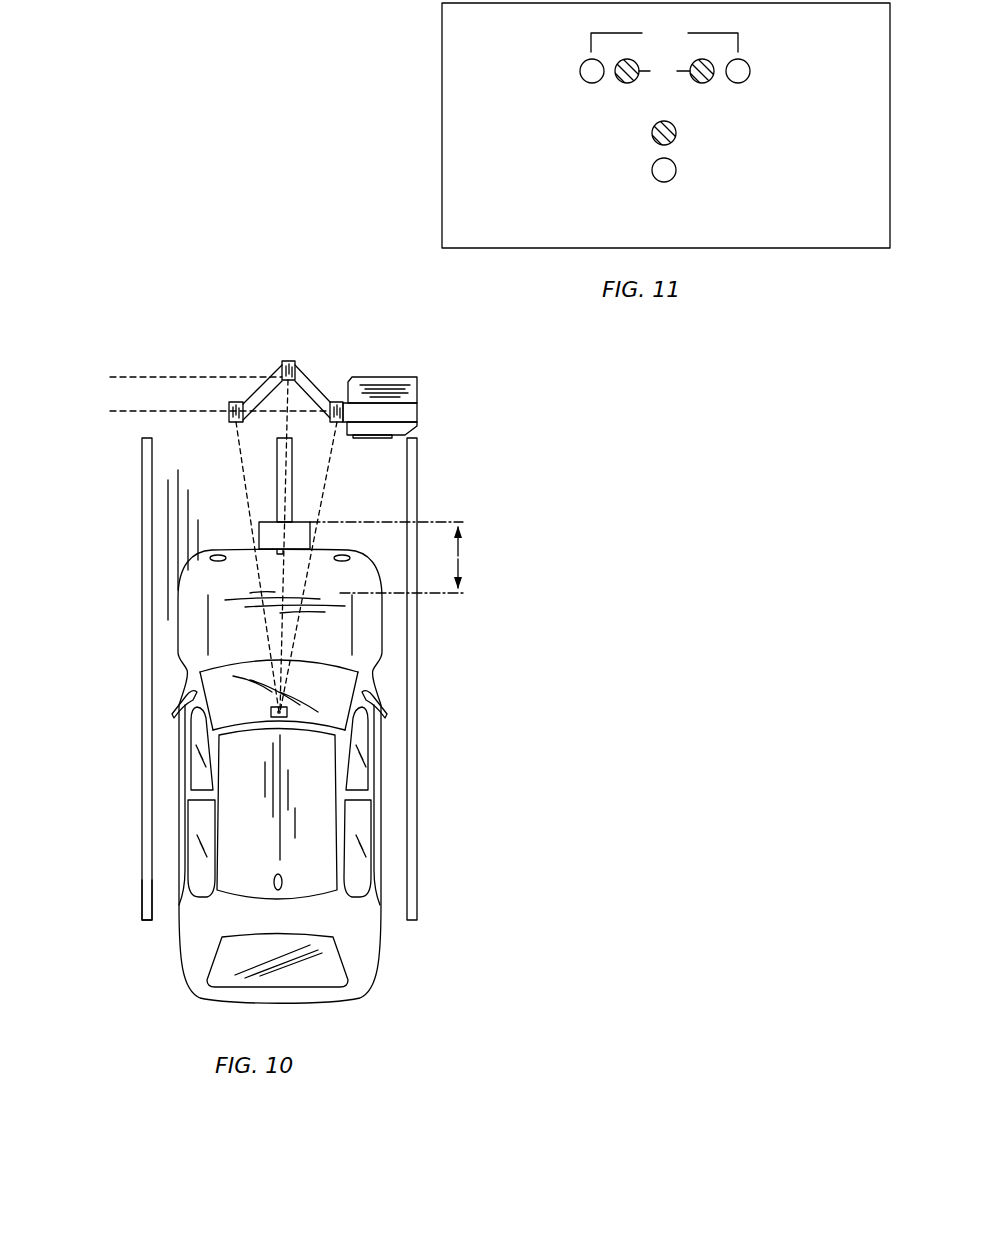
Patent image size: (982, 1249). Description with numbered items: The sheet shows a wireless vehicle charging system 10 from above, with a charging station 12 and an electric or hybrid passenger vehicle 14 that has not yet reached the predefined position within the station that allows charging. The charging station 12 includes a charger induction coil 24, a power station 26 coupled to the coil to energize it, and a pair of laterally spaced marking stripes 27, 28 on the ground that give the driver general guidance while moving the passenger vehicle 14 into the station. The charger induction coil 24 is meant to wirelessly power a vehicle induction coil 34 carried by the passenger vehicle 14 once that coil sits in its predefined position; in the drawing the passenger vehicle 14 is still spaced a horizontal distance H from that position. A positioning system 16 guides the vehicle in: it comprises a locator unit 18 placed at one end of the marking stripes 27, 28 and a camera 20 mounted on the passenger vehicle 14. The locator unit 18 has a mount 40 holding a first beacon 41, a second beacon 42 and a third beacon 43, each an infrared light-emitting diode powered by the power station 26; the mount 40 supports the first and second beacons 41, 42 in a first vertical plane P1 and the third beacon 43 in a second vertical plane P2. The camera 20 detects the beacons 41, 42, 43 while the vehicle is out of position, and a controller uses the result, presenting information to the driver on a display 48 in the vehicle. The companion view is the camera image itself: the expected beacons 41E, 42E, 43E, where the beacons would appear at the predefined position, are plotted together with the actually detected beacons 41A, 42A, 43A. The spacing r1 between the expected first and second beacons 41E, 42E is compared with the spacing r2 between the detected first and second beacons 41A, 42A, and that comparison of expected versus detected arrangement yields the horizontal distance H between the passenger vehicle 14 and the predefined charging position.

In FIG. 10, the wireless vehicle charging system 10 is at (155, 296).
In FIG. 10, the charging station 12 is at (139, 443).
In FIG. 10, the passenger vehicle 14 is at (381, 817).
In FIG. 10, the positioning system 16 is at (226, 427).
In FIG. 10, the locator unit 18 is at (316, 332).
In FIG. 10, the camera 20 is at (294, 709).
In FIG. 10, the charger induction coil 24 is at (306, 519).
In FIG. 10, the power station 26 is at (421, 401).
In FIG. 10, the marking stripe 27 is at (420, 898).
In FIG. 10, the marking stripe 28 is at (139, 891).
In FIG. 10, the vehicle induction coil 34 is at (381, 769).
In FIG. 10, the mount 40 is at (265, 379).
In FIG. 10, the first beacon 41 is at (236, 400).
In FIG. 10, the second beacon 42 is at (338, 400).
In FIG. 10, the third beacon 43 is at (288, 357).
In FIG. 10, the display 48 is at (365, 737).
In FIG. 10, the horizontal distance H is at (399, 557).
In FIG. 10, the first vertical plane P1 is at (132, 411).
In FIG. 10, the second vertical plane P2 is at (132, 377).
In FIG. 11, the expected beacon spacing r1 is at (664, 36).
In FIG. 11, the detected beacon spacing r2 is at (664, 71).
In FIG. 11, the expected first beacon 41E is at (581, 67).
In FIG. 11, the actually detected first beacon 41A is at (620, 82).
In FIG. 11, the expected second beacon 42E is at (749, 66).
In FIG. 11, the actually detected second beacon 42A is at (708, 82).
In FIG. 11, the expected third beacon 43E is at (674, 178).
In FIG. 11, the actually detected third beacon 43A is at (656, 143).